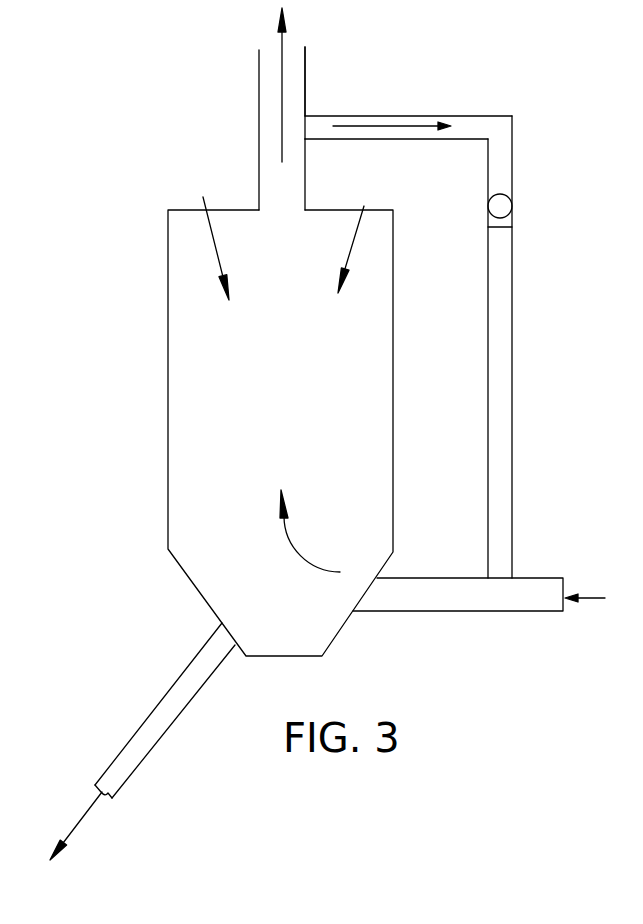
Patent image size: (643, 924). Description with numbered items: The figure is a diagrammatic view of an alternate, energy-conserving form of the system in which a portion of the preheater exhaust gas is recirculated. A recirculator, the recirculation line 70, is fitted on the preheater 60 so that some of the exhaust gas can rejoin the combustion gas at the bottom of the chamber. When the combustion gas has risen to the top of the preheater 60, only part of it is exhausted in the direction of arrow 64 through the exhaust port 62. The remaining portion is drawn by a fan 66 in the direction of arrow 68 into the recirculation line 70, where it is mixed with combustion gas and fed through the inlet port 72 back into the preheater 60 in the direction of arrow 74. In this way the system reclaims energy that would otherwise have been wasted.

The preheater 60 is at (393, 350).
The exhaust port 62 is at (305, 65).
The arrow 64 is at (283, 60).
The fan 66 is at (503, 194).
The arrow 68 is at (402, 123).
The recirculation line 70 is at (513, 352).
The inlet port 72 is at (437, 611).
The arrow 74 is at (298, 555).